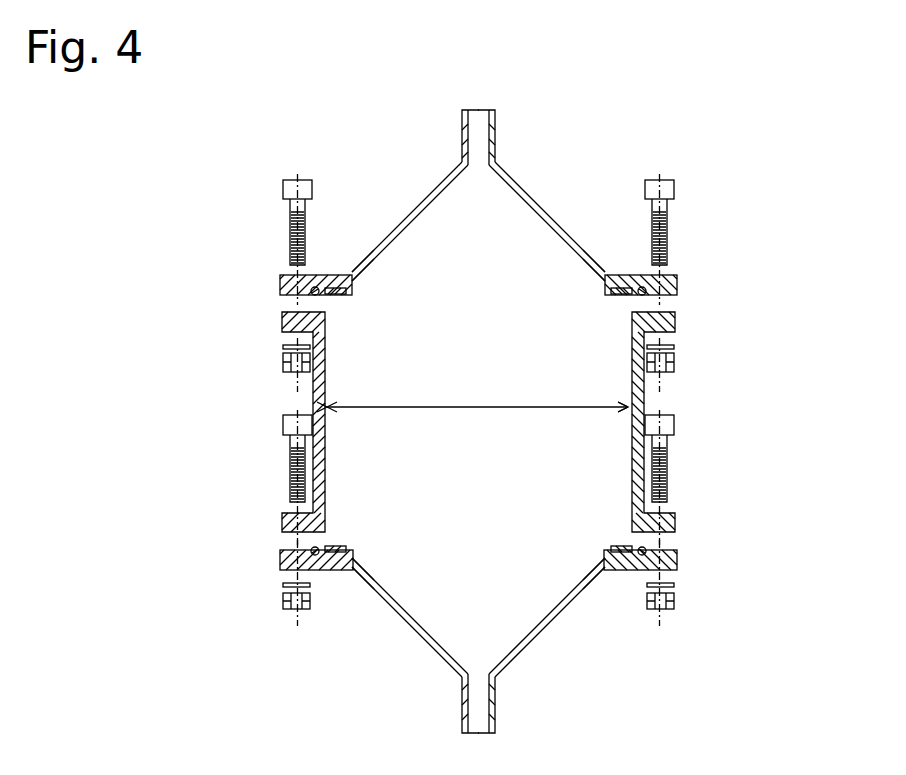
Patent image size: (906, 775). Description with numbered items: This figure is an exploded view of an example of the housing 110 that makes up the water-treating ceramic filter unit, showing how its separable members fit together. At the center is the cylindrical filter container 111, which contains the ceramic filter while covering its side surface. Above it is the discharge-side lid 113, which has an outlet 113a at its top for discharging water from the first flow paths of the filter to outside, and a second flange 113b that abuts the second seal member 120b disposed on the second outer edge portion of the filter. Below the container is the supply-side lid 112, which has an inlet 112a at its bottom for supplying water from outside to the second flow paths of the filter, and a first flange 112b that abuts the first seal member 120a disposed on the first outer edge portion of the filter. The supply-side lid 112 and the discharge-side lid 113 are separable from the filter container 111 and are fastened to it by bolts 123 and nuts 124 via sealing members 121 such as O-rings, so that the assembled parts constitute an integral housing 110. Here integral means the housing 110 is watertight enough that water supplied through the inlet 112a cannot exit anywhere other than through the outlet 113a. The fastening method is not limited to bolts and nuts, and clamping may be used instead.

The housing 110 is at (607, 162).
The filter container 111 is at (641, 396).
The supply-side lid 112 is at (541, 628).
The inlet 112a is at (477, 728).
The first flange 112b is at (346, 573).
The discharge-side lid 113 is at (534, 200).
The outlet 113a is at (476, 113).
The second flange 113b is at (342, 279).
The first seal member 120a is at (330, 548).
The second seal member 120b is at (332, 297).
The sealing member 121 is at (314, 288).
The bolt 123 is at (297, 190).
The nut 124 is at (291, 363).